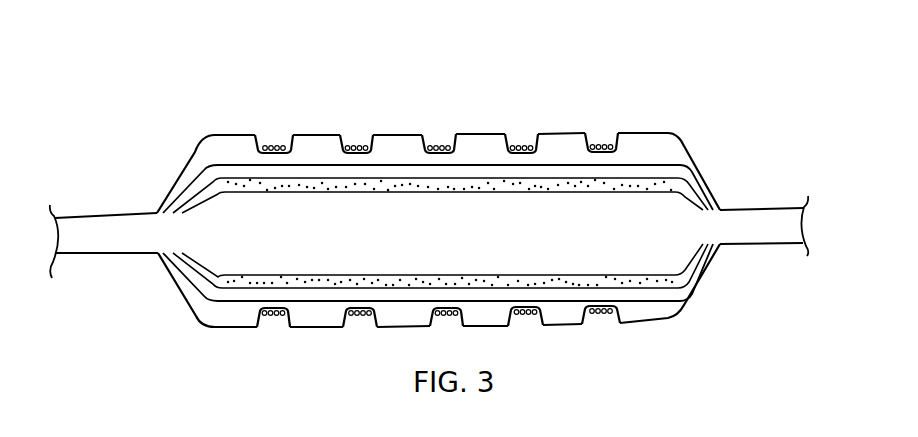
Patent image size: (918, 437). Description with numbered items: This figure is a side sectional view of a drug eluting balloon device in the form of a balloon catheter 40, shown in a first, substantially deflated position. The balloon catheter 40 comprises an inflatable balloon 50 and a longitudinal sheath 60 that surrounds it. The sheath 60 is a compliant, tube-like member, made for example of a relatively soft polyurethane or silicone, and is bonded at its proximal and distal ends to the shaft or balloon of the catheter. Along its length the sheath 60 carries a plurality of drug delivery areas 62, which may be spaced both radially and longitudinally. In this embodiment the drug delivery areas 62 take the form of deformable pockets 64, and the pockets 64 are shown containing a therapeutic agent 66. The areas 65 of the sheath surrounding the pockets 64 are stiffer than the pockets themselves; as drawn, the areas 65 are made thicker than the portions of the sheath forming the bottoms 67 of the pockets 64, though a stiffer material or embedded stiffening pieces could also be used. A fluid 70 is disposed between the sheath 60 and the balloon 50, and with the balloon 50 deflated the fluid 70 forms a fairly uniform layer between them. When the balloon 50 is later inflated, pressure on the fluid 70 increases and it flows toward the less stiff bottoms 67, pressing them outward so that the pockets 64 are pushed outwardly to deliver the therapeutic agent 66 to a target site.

The balloon catheter 40 is at (259, 82).
The inflatable balloon 50 is at (235, 245).
The longitudinal sheath 60 is at (712, 160).
The drug delivery areas 62 is at (525, 128).
The deformable pockets 64 is at (356, 129).
The areas of the sheath surrounding the pockets 65 is at (320, 139).
The therapeutic agent 66 is at (364, 143).
The bottoms of the pockets 67 is at (352, 161).
The fluid 70 is at (638, 188).